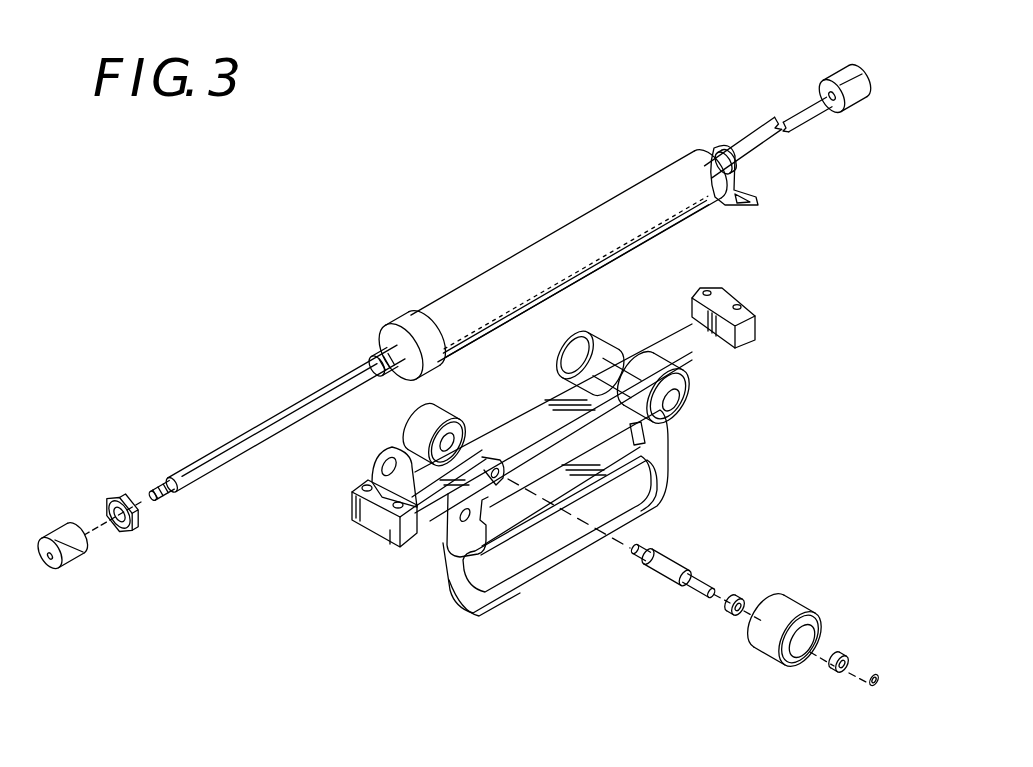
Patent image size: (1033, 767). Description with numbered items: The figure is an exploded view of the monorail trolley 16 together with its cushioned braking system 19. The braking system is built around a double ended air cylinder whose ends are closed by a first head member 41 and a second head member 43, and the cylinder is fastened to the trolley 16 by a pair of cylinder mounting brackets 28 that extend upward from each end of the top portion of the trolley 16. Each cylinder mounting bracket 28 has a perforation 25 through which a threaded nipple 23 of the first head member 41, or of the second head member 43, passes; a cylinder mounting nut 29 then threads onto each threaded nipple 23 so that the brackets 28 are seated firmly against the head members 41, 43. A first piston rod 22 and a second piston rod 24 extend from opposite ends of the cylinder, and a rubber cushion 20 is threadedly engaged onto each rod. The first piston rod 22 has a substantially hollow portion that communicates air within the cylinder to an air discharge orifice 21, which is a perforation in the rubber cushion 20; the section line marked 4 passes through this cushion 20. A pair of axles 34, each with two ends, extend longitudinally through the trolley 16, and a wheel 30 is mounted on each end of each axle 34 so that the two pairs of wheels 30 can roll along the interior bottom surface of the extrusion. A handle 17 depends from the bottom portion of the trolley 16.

The section line 4- 4 is at (48, 533).
The monorail trolley 16 is at (550, 614).
The handle 17 is at (585, 556).
The cushioned braking system 19 is at (528, 236).
The rubber cushion 20 is at (73, 563).
The air discharge orifice 21 is at (50, 560).
The first piston rod 22 is at (266, 427).
The threaded nipple 23 is at (377, 352).
The second piston rod 24 is at (748, 141).
The perforation 25 is at (392, 468).
The cylinder mounting bracket 28 is at (747, 198).
The cylinder mounting nut 29 is at (117, 500).
The wheel 30 is at (453, 423).
The axle 34 is at (671, 562).
The first head member 41 is at (400, 330).
The second head member 43 is at (697, 155).